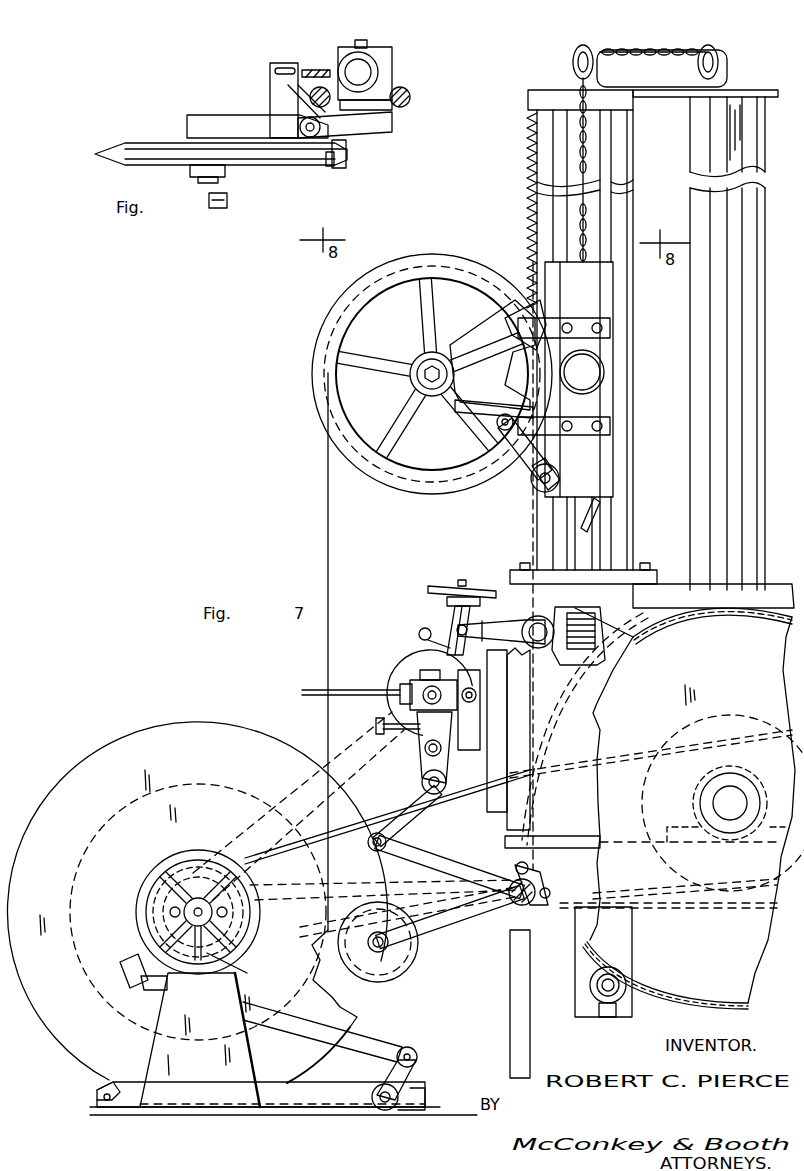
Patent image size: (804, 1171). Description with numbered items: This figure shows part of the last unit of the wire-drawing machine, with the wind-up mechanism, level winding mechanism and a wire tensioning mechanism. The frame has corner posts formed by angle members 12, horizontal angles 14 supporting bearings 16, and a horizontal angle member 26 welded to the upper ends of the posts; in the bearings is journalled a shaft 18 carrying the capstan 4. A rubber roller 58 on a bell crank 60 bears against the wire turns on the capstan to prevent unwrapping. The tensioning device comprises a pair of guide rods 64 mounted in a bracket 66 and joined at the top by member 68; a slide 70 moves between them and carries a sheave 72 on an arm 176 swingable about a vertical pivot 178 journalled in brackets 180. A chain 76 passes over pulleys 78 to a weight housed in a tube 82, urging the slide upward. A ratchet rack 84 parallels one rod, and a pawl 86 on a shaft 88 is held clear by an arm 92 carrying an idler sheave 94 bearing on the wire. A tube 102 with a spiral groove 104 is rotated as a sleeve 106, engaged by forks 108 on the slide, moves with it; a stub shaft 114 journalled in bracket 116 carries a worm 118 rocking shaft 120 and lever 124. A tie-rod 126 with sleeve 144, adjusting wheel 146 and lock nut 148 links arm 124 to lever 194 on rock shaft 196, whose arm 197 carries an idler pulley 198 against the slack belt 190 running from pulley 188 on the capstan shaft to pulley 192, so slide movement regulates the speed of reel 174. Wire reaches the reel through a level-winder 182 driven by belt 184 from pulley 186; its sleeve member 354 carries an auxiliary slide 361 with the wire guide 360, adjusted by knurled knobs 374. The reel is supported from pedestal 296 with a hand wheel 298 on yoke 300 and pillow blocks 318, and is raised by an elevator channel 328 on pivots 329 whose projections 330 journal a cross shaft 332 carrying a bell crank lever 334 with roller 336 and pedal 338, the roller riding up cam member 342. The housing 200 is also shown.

In FIG. 7, the capstan 4 is at (677, 813).
In FIG. 7, the angle member 12 is at (518, 982).
In FIG. 7, the horizontally arranged angle 14 is at (570, 856).
In FIG. 7, the bearing 16 is at (662, 840).
In FIG. 7, the shaft 18 is at (740, 800).
In FIG. 7, the horizontal angle member 26 is at (652, 592).
In FIG. 7, the rubber roller 58 is at (590, 986).
In FIG. 7, the bell crank 60 is at (610, 1019).
In FIG. 8, the cylindrical guide rod 64 is at (410, 100).
In FIG. 7, the cylindrical guide rod 64 is at (627, 530).
In FIG. 7, the bracket 66 is at (598, 569).
In FIG. 7, the member 68 is at (545, 100).
In FIG. 8, the slide 70 is at (385, 108).
In FIG. 7, the slide 70 is at (592, 300).
In FIG. 8, the sheave 72 is at (245, 155).
In FIG. 7, the sheave 72 is at (400, 266).
In FIG. 7, the chain 76 is at (662, 47).
In FIG. 7, the pulley 78 is at (588, 47).
In FIG. 7, the tube 82 is at (746, 455).
In FIG. 8, the ratchet rack 84 is at (312, 70).
In FIG. 7, the ratchet rack 84 is at (534, 116).
In FIG. 8, the pawl 86 is at (285, 70).
In FIG. 7, the pawl 86 is at (506, 366).
In FIG. 7, the shaft 88 is at (504, 430).
In FIG. 8, the arm 92 is at (343, 152).
In FIG. 7, the arm 92 is at (530, 470).
In FIG. 8, the idler sheave 94 is at (328, 162).
In FIG. 7, the idler sheave 94 is at (542, 491).
In FIG. 8, the tube 102 is at (374, 62).
In FIG. 7, the tube 102 is at (596, 526).
In FIG. 8, the spiral groove 104 is at (372, 76).
In FIG. 7, the spiral groove 104 is at (598, 506).
In FIG. 8, the cylindrical sleeve 106 is at (350, 50).
In FIG. 8, the fork 108 is at (392, 86).
In FIG. 7, the stub shaft 114 is at (600, 600).
In FIG. 7, the bracket 116 is at (562, 660).
In FIG. 7, the worm gear 118 is at (600, 640).
In FIG. 7, the rock shaft 120 is at (541, 648).
In FIG. 7, the lever 124 is at (513, 624).
In FIG. 7, the rod 126 is at (413, 784).
In FIG. 7, the sleeve 144 is at (456, 616).
In FIG. 7, the adjusting wheel 146 is at (444, 586).
In FIG. 7, the lock nut 148 is at (423, 634).
In FIG. 7, the reel 174 is at (88, 770).
In FIG. 8, the arm 176 is at (232, 122).
In FIG. 7, the arm 176 is at (470, 392).
In FIG. 8, the vertical pivot 178 is at (309, 132).
In FIG. 7, the vertical pivot 178 is at (528, 376).
In FIG. 8, the bracket 180 is at (355, 128).
In FIG. 7, the bracket 180 is at (586, 420).
In FIG. 7, the level-winder 182 is at (426, 716).
In FIG. 7, the belt 184 is at (330, 752).
In FIG. 7, the pulley 186 is at (152, 906).
In FIG. 7, the pulley 188 is at (715, 722).
In FIG. 7, the slack belt 190 is at (412, 910).
In FIG. 7, the pulley 192 is at (158, 926).
In FIG. 7, the lever 194 is at (432, 862).
In FIG. 7, the rock shaft 196 is at (528, 906).
In FIG. 7, the arm 197 is at (455, 905).
In FIG. 7, the idler pulley 198 is at (392, 962).
In FIG. 7, the wheel housing 200 is at (326, 527).
In FIG. 7, the pedestal 296 is at (190, 1070).
In FIG. 7, the hand wheel 298 is at (175, 858).
In FIG. 7, the yoke 300 is at (233, 905).
In FIG. 7, the pillow block 318 is at (227, 960).
In FIG. 7, the channel member 328 is at (310, 1098).
In FIG. 7, the pivot 329 is at (107, 1102).
In FIG. 7, the upright projection 330 is at (412, 1078).
In FIG. 7, the cross shaft 332 is at (417, 1056).
In FIG. 7, the bell crank lever 334 is at (360, 1044).
In FIG. 7, the roller 336 is at (384, 1111).
In FIG. 7, the pedal member 338 is at (120, 968).
In FIG. 7, the inclined cam member 342 is at (418, 1102).
In FIG. 7, the sleeve member 354 is at (418, 678).
In FIG. 7, the wire guide 360 is at (318, 688).
In FIG. 7, the auxiliary slide 361 is at (402, 686).
In FIG. 7, the knurled knob 374 is at (380, 724).